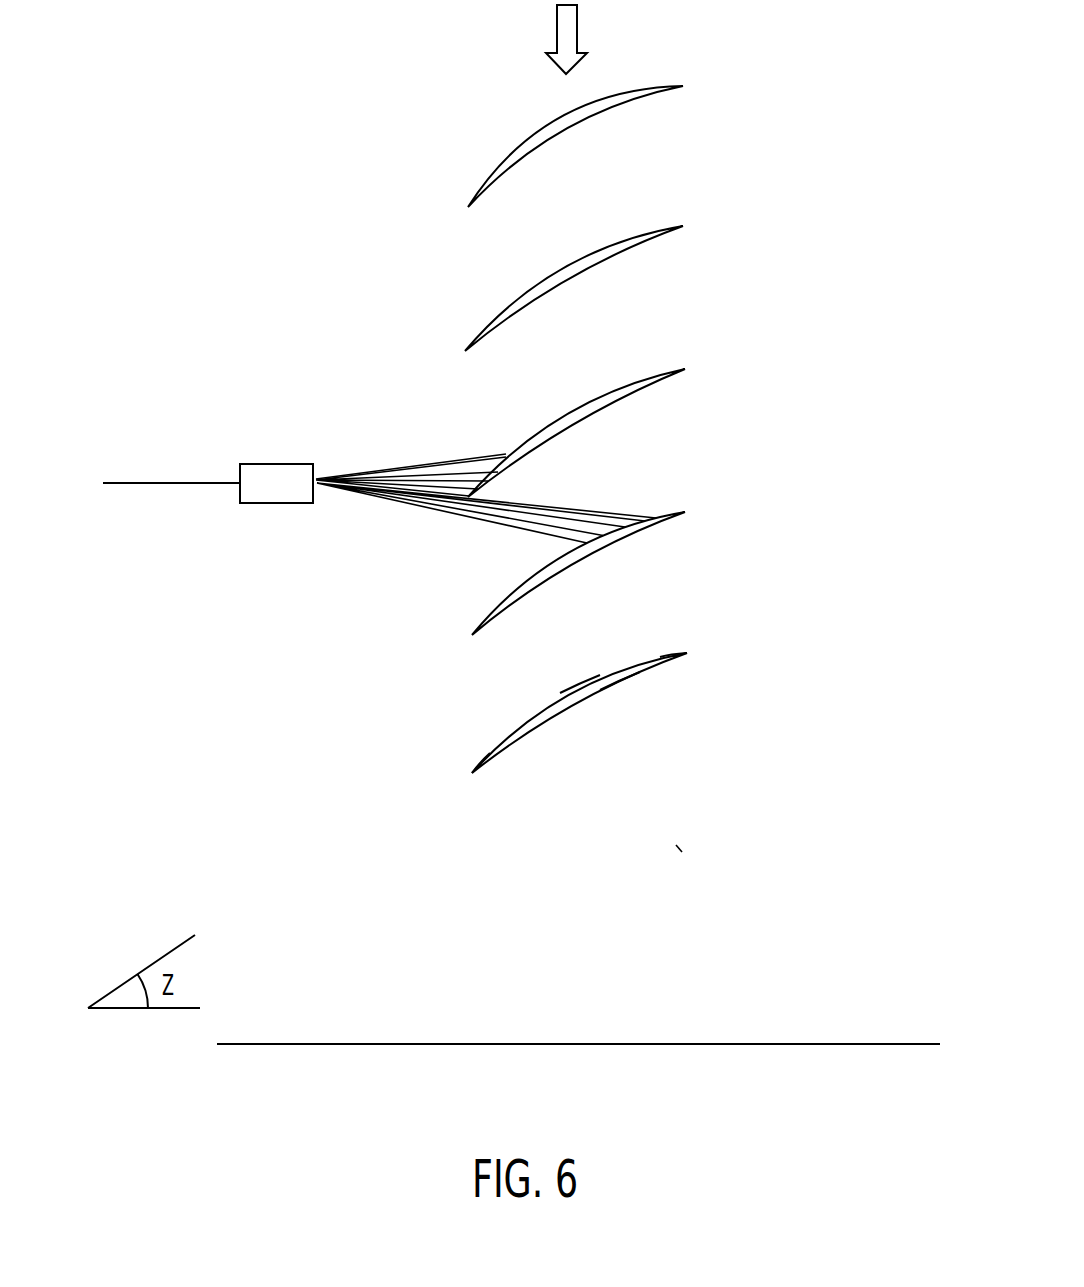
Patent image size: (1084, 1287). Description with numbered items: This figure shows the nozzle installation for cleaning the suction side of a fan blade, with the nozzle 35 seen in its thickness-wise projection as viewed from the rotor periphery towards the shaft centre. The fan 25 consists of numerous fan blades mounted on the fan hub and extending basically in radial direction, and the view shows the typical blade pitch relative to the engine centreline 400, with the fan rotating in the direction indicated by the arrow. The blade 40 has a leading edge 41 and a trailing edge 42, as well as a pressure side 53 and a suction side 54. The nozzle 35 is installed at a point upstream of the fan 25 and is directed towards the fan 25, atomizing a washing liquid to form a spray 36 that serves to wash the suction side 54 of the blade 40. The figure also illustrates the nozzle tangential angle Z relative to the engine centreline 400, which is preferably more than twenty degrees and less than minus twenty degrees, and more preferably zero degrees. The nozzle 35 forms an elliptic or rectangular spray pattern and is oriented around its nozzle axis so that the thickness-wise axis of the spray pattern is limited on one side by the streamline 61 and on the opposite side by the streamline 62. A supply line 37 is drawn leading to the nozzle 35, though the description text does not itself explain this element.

The fan 25 is at (680, 848).
The nozzle 35 is at (262, 468).
The spray 36 is at (407, 485).
The supply line 37 is at (150, 486).
The blade 40 is at (574, 710).
The leading edge 41 is at (475, 770).
The trailing edge 42 is at (688, 655).
The pressure side 53 is at (625, 683).
The suction side 54 is at (578, 695).
The streamline 61 is at (453, 462).
The streamline 62 is at (437, 513).
The engine centreline 400 is at (793, 1043).